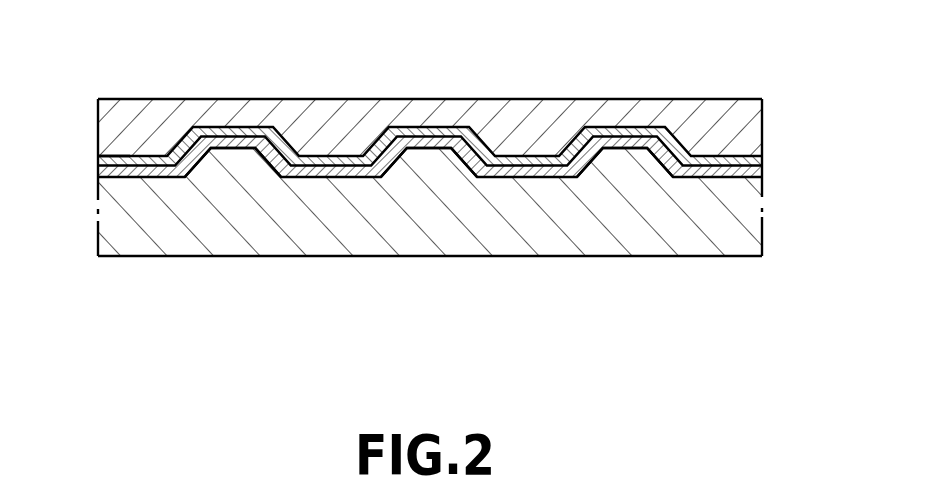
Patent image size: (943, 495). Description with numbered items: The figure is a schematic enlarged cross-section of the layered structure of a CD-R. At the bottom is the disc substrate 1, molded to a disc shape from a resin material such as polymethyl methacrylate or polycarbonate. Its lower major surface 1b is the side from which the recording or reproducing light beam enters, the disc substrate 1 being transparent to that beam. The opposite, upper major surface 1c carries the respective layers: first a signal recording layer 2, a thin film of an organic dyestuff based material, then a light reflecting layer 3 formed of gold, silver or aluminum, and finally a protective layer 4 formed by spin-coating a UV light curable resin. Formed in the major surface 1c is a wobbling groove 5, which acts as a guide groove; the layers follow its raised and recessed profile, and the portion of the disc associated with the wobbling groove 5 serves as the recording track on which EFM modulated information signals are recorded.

The disc substrate 1 is at (750, 218).
The major surface 1b is at (522, 258).
The major surface 1c is at (127, 163).
The signal recording layer 2 is at (758, 172).
The light reflecting layer 3 is at (758, 160).
The protective layer 4 is at (755, 118).
The wobbling groove 5 is at (238, 158).